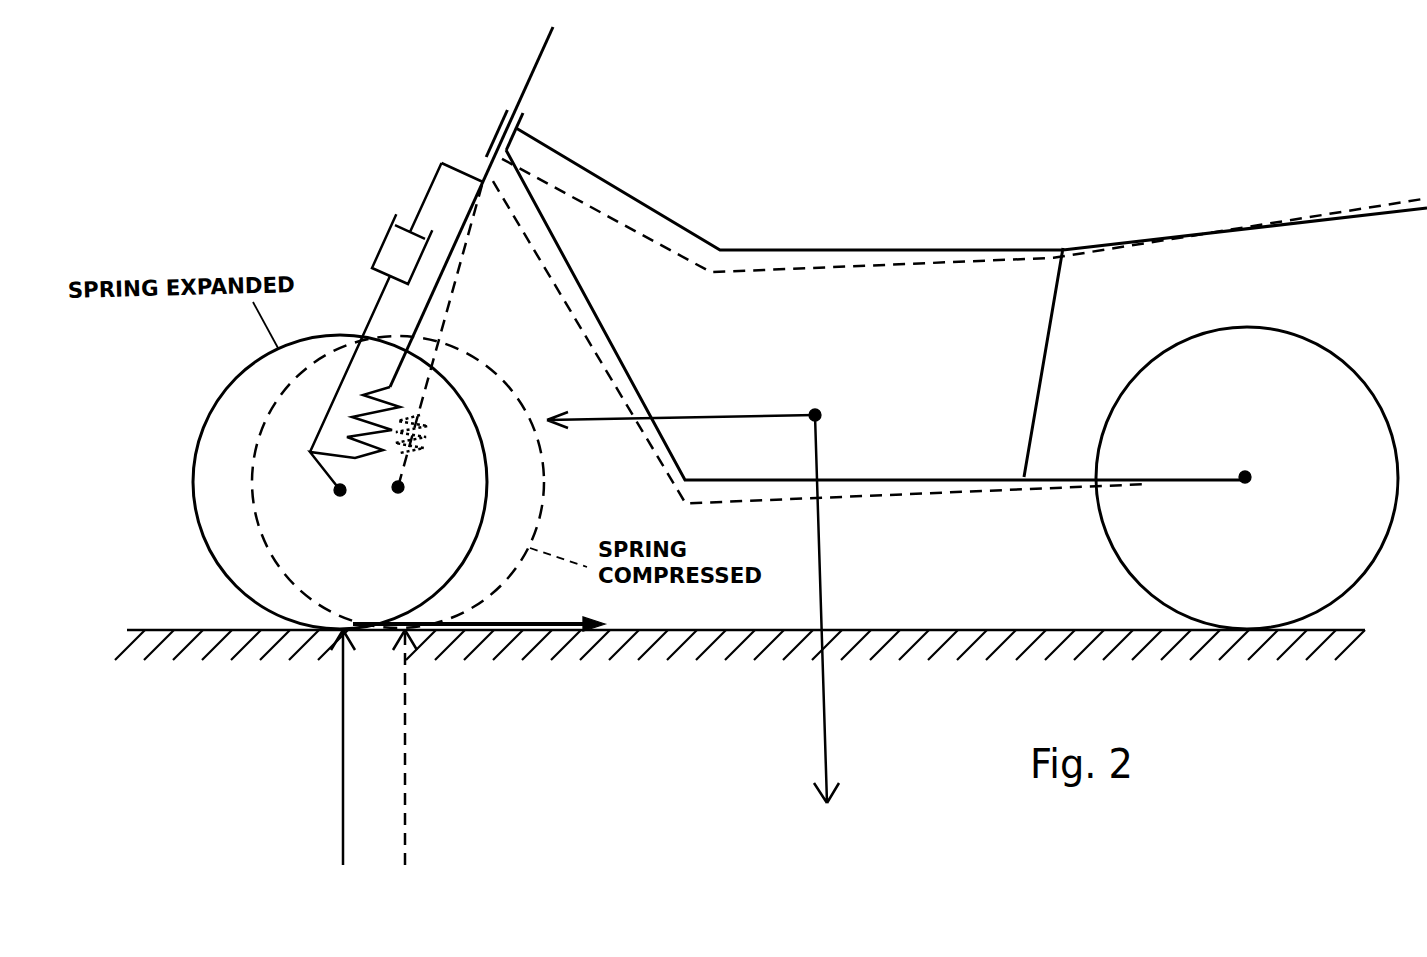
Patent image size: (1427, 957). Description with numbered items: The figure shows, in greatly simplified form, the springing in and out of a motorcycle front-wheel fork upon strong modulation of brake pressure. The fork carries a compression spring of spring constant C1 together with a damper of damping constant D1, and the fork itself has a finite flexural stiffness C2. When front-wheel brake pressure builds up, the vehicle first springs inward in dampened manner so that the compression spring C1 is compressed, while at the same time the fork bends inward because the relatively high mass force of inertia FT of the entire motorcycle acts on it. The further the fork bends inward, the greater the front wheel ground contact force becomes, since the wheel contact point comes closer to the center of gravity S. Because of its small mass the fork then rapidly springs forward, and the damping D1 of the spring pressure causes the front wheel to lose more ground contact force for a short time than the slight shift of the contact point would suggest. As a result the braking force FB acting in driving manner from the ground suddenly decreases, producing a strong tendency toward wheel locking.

The damping constant D1 is at (396, 307).
The flexural stiffness C2 is at (448, 267).
The spring constant C1 is at (431, 442).
The center of gravity S is at (830, 391).
The mass force of inertia FT is at (681, 397).
The weight force G is at (839, 609).
The braking force FB is at (479, 605).